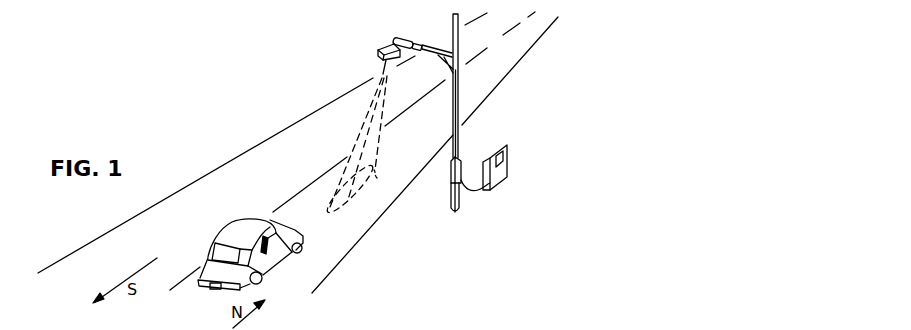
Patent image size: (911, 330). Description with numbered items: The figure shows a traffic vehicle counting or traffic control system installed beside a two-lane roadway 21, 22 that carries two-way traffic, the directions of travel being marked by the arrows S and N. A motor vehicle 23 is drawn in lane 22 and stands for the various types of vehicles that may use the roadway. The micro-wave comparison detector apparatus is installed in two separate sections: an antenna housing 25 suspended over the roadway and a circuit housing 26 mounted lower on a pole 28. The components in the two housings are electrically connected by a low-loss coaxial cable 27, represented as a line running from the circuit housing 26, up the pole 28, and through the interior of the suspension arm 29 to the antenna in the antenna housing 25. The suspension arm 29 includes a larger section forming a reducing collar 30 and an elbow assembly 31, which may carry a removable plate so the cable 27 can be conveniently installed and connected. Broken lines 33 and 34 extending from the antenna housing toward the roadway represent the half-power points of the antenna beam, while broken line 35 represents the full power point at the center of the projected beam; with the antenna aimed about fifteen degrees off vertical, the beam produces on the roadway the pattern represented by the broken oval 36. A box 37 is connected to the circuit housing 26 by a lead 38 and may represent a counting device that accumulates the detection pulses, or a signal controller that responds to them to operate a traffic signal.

The roadway lane 21 is at (197, 239).
The roadway lane 22 is at (302, 289).
The motor vehicle 23 is at (250, 254).
The antenna housing 25 is at (378, 50).
The circuit housing 26 is at (452, 170).
The coaxial cable 27 is at (458, 153).
The pole 28 is at (451, 203).
The suspension arm 29 is at (434, 49).
The reducing collar 30 is at (418, 43).
The elbow assembly 31 is at (396, 40).
The half-power point broken line 33 is at (360, 133).
The half-power point broken line 34 is at (385, 108).
The full power point broken line 35 is at (357, 153).
The beam pattern oval 36 is at (377, 178).
The box 37 is at (507, 172).
The lead 38 is at (475, 192).